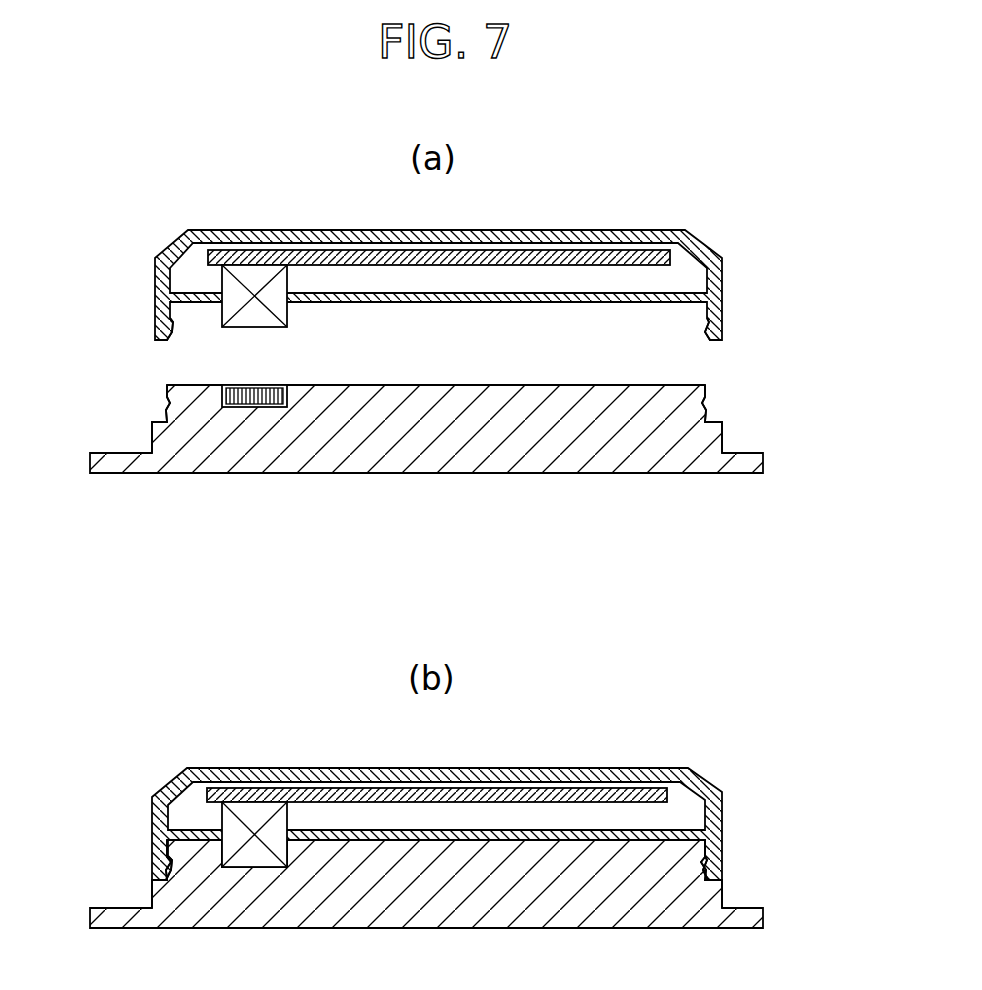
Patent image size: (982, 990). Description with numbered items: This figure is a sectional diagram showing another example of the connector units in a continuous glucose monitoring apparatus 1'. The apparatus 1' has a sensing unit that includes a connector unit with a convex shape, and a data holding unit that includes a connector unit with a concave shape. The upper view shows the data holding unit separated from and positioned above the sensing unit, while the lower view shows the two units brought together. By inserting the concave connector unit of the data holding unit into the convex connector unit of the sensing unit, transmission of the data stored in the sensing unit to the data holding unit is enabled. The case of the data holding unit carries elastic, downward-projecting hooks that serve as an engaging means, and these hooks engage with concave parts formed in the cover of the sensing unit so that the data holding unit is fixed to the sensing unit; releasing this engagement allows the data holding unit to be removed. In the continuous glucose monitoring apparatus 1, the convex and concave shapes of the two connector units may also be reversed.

The continuous glucose monitoring apparatus 1 is at (718, 368).
The continuous glucose monitoring apparatus 1′ is at (665, 753).